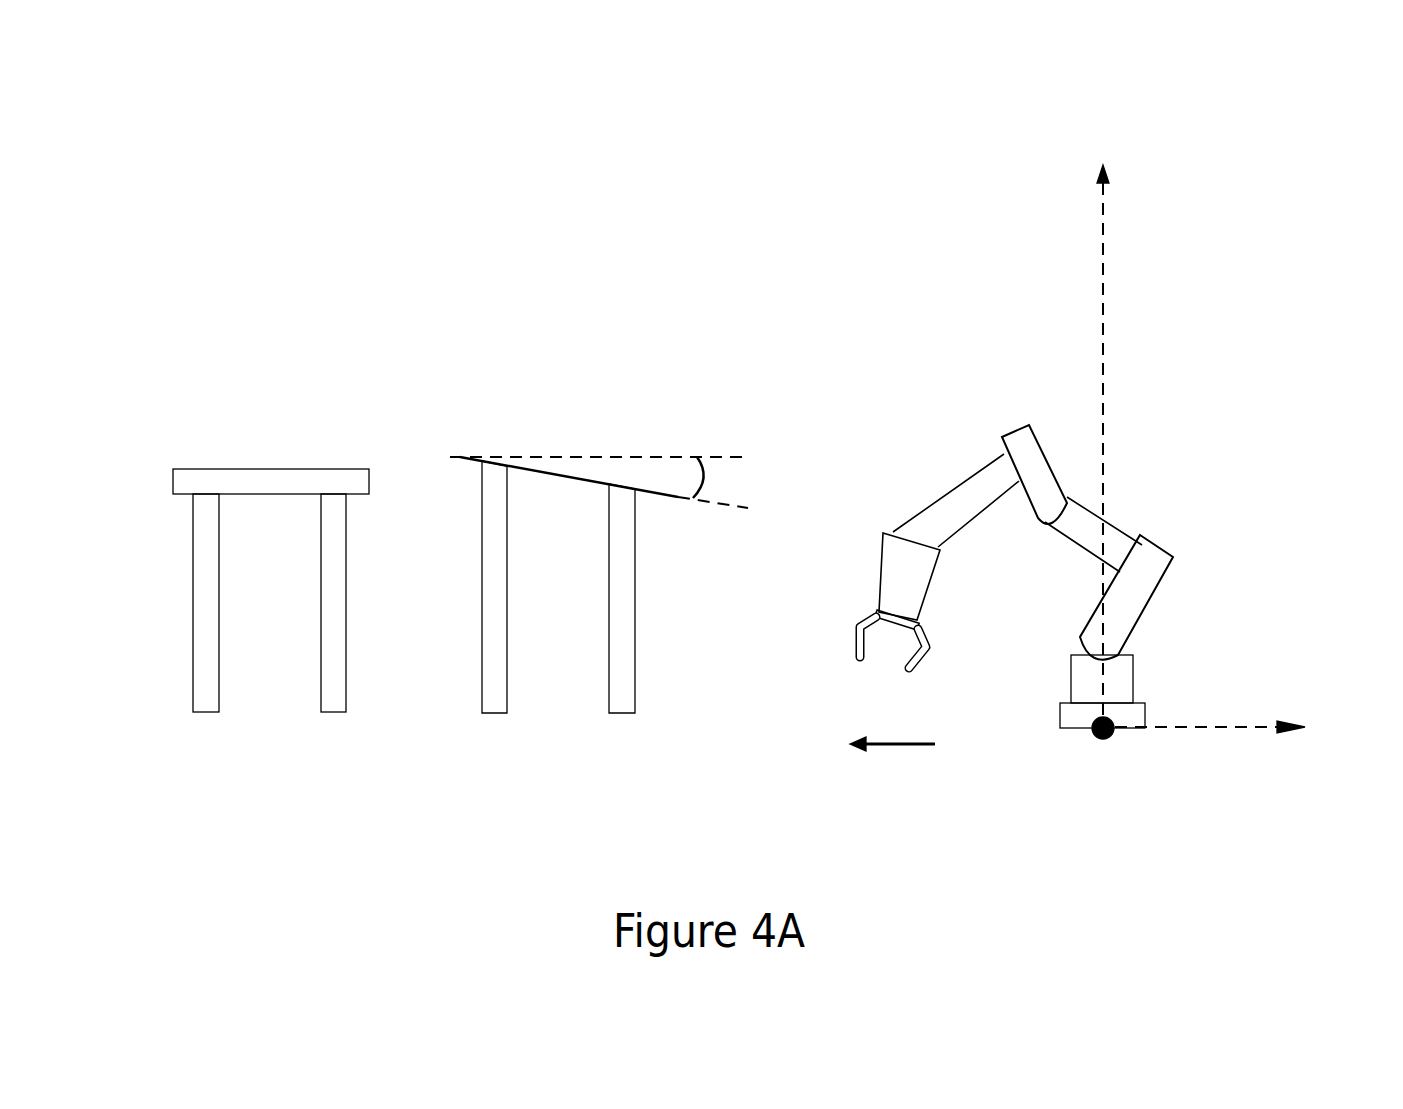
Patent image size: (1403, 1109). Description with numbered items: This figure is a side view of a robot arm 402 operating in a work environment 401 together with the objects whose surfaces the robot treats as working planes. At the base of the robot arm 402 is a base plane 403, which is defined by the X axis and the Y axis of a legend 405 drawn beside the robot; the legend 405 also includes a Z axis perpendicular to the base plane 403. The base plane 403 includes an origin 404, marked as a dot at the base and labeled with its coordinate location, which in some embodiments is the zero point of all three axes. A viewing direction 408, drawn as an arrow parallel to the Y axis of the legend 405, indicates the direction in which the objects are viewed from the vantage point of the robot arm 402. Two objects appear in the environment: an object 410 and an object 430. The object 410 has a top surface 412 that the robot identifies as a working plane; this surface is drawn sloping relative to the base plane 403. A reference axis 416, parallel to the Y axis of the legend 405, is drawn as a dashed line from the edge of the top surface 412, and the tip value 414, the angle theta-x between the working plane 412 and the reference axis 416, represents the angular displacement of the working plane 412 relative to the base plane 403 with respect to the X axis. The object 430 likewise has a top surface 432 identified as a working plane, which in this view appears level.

The work environment 401 is at (535, 825).
The robot arm 402 is at (1177, 558).
The base plane 403 is at (1085, 712).
The origin 404 is at (1110, 740).
The legend 405 is at (1222, 728).
The viewing direction 408 is at (892, 758).
The object 410 is at (478, 573).
The top surface 412 is at (458, 462).
The tip value 414 is at (722, 473).
The reference axis 416 is at (672, 457).
The object 430 is at (348, 705).
The top surface 432 is at (242, 477).